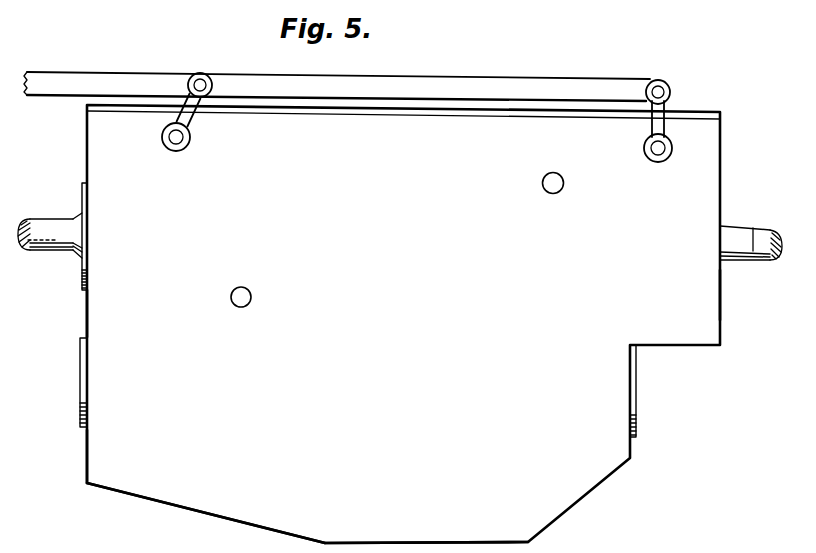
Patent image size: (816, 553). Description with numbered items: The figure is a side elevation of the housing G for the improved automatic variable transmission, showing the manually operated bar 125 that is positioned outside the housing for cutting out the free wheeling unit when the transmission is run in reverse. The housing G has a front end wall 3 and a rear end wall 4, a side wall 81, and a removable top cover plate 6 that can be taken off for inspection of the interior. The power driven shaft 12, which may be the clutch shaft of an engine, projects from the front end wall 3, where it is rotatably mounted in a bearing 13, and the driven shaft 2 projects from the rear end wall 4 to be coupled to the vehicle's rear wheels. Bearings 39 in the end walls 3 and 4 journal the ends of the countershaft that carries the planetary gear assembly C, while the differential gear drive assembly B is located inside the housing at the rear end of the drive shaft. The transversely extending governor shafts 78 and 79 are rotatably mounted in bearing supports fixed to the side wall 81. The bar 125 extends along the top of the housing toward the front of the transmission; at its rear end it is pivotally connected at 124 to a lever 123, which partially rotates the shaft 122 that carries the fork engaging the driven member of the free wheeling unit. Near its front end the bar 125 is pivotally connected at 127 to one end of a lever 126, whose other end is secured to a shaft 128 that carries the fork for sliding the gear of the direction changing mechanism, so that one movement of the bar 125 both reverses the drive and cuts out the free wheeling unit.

The housing G is at (81, 160).
The top cover plate 6 is at (420, 113).
The manually operated bar 125 is at (99, 81).
The pivot connection 127 is at (201, 74).
The lever 126 is at (188, 121).
The shaft 128 is at (186, 144).
The pivot connection 124 is at (668, 87).
The lever 123 is at (668, 108).
The shaft 122 is at (658, 158).
The governor shaft 79 is at (564, 183).
The governor shaft 78 is at (249, 299).
The power driven shaft 12 is at (38, 220).
The bearing 13 is at (82, 277).
The end wall 3 is at (86, 308).
The bearings 39 is at (80, 387).
The side wall 81 is at (125, 428).
The driven shaft 2 is at (757, 232).
The end wall 4 is at (722, 292).
The differential gear drive assembly B is at (206, 518).
The planetary gear assembly C is at (426, 546).